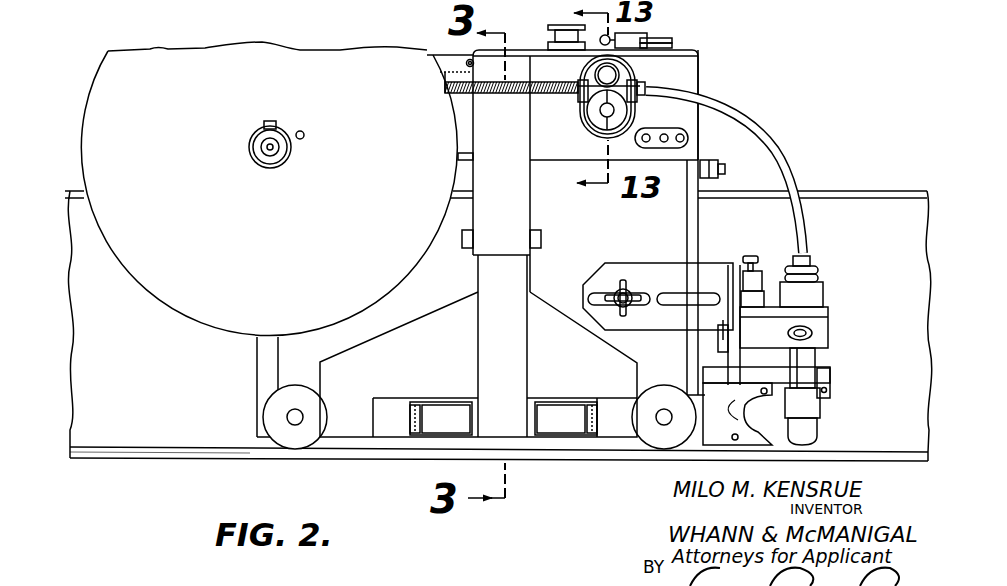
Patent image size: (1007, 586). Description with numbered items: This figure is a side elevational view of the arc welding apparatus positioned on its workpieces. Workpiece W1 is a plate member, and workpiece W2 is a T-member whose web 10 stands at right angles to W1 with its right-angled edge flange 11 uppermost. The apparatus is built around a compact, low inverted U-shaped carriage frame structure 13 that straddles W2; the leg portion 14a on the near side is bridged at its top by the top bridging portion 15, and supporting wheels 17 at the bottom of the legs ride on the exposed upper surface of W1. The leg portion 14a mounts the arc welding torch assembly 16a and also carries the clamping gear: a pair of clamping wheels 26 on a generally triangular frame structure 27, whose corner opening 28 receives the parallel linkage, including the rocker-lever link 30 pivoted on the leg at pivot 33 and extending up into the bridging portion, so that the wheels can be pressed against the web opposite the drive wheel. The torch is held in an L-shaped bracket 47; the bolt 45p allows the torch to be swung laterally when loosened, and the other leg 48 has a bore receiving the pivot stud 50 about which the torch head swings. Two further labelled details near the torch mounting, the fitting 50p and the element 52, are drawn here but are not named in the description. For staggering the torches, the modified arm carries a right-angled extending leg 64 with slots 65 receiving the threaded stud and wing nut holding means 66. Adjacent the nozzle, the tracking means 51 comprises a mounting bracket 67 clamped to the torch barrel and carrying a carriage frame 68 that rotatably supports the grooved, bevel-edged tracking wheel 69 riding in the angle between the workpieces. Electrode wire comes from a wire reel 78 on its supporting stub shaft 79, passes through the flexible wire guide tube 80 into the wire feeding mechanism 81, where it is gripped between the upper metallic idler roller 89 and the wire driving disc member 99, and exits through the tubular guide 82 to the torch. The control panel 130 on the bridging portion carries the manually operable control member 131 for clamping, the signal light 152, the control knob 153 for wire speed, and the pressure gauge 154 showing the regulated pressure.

The web 10 is at (498, 321).
The right-angled edge flange 11 is at (883, 191).
The workpiece W1 is at (385, 456).
The workpiece W2 is at (162, 420).
The carriage frame structure 13 is at (702, 81).
The leg portion 14a is at (702, 223).
The top bridging portion 15 is at (699, 132).
The arc welding torch assembly 16a is at (830, 359).
The supporting wheels 17 is at (285, 440).
The clamping wheels 26 is at (425, 415).
The frame structure 27 is at (457, 400).
The corner opening 28 is at (522, 420).
The link 30 is at (511, 330).
The pivot 33 is at (464, 240).
The bolt 45p is at (822, 345).
The L-shaped bracket 47 is at (830, 331).
The leg 48 is at (770, 290).
The pivot stud 50 is at (825, 318).
The fitting 50p is at (724, 170).
The tracking means 51 is at (703, 388).
The valve stem 52 is at (738, 253).
The right-angled extending leg 64 is at (612, 272).
The slots 65 is at (667, 306).
The threaded stud and wing nut holding means 66 is at (613, 295).
The mounting bracket 67 is at (815, 396).
The carriage frame 68 is at (805, 444).
The tracking wheel 69 is at (713, 445).
The wire reel 78 is at (269, 239).
The supporting stub shaft 79 is at (272, 145).
The flexible wire guide tube 80 is at (550, 93).
The wire feeding mechanism 81 is at (664, 73).
The tubular guide 82 is at (772, 135).
The upper metallic idler roller 89 is at (598, 68).
The wire driving disc member 99 is at (625, 112).
The control panel 130 is at (467, 60).
The manually operable control member 131 is at (648, 30).
The signal light 152 is at (550, 28).
The control knob 153 is at (668, 40).
The pressure gauge 154 is at (672, 46).